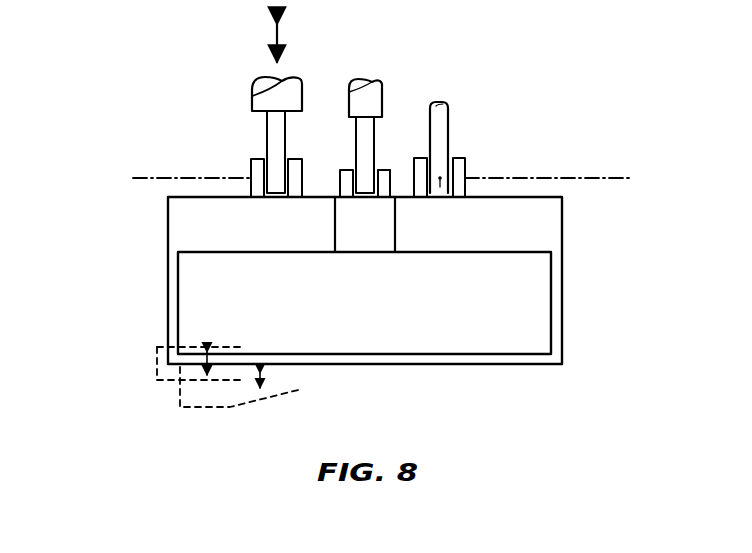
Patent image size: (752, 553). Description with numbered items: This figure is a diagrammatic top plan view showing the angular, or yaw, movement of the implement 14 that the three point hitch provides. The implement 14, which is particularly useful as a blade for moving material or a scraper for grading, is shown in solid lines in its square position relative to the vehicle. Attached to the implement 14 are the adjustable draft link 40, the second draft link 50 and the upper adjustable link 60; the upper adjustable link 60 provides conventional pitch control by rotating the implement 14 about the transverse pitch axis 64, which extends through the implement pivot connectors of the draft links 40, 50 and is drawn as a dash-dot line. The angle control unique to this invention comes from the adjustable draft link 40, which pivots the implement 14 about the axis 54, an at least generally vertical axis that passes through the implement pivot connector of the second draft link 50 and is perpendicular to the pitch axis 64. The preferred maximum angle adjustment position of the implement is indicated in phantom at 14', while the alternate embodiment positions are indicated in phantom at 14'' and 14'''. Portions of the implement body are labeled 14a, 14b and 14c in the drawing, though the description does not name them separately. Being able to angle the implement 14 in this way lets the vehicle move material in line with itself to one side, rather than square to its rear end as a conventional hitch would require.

The implement 14 is at (406, 280).
The central block of housing 14a is at (348, 188).
The first socket 14b is at (251, 172).
The second socket 14c is at (458, 168).
The preferred maximum angle adjustment position 14' is at (241, 402).
The alternate embodiment position 14'' is at (158, 390).
The alternate embodiment position 14''' is at (156, 355).
The adjustable draft link 40 is at (250, 98).
The second draft link 50 is at (456, 112).
The vertical axis 54 is at (442, 202).
The upper adjustable link 60 is at (391, 95).
The pitch axis 64 is at (577, 170).